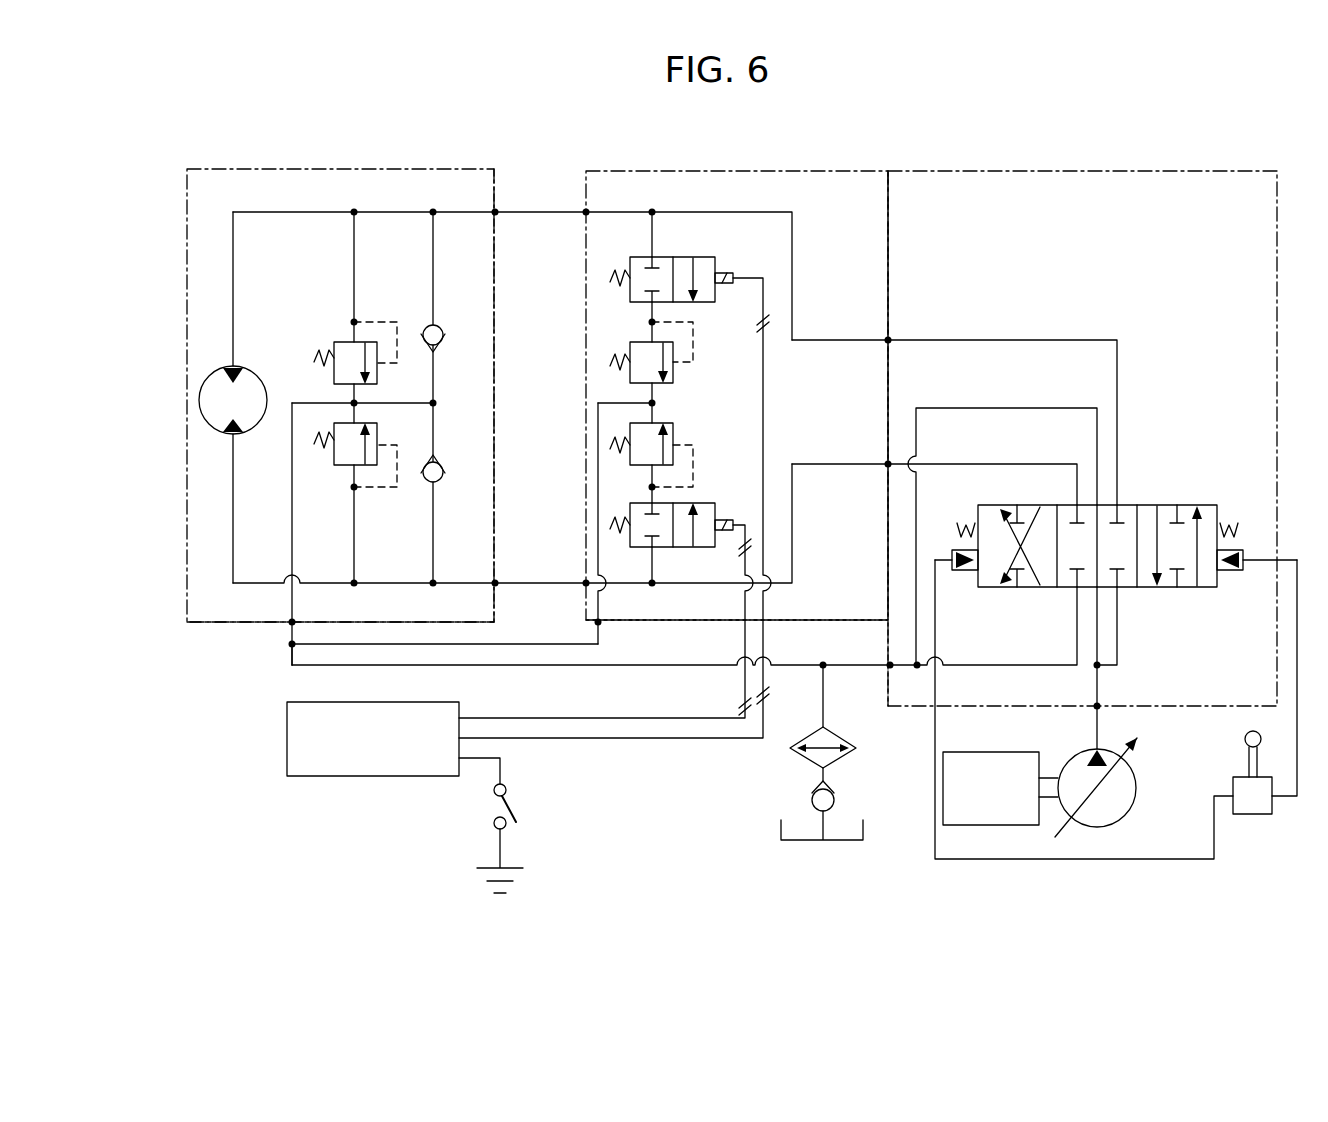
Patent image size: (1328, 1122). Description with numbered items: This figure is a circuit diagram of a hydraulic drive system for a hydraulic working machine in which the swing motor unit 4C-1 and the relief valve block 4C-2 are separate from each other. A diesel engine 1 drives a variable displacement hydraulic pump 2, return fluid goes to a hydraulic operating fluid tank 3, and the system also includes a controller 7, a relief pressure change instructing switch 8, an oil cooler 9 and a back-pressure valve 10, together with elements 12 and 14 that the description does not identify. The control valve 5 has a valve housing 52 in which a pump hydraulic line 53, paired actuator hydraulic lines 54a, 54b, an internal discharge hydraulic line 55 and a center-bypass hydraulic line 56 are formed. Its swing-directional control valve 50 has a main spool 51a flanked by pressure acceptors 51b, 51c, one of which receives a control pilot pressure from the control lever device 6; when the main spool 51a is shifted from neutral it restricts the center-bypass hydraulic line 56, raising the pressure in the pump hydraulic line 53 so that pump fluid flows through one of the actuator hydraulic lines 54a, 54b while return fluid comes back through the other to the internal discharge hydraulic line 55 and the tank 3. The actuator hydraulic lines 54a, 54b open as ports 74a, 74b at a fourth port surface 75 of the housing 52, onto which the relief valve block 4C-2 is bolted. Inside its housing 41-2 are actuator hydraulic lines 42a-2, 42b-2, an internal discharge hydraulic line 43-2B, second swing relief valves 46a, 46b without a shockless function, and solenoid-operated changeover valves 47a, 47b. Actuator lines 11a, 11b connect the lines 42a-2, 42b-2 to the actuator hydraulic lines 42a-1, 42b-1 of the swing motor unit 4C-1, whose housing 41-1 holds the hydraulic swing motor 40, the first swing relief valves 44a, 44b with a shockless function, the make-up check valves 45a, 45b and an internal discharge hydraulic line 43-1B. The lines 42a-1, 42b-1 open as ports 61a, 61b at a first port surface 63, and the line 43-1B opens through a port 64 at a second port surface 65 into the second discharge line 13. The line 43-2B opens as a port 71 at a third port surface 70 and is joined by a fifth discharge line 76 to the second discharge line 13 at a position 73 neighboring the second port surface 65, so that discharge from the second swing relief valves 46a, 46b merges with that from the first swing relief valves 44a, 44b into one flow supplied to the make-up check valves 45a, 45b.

The diesel engine 1 is at (1012, 748).
The variable displacement hydraulic pump 2 is at (1138, 792).
The hydraulic operating fluid tank 3 is at (865, 822).
The control valve 5 is at (1130, 170).
The control lever device 6 is at (1273, 810).
The controller 7 is at (373, 778).
The relief pressure change instructing switch 8 is at (517, 808).
The oil cooler 9 is at (850, 735).
The back-pressure valve 10 is at (836, 793).
The actuator line 11a is at (530, 213).
The actuator line 11b is at (528, 582).
The line 12 is at (807, 663).
The second discharge line 13 is at (480, 667).
The drain line 14 is at (824, 692).
The hydraulic swing motor 40 is at (255, 370).
The housing 41-1 is at (470, 198).
The housing 41-2 is at (862, 203).
The actuator hydraulic line 42a-1 is at (271, 211).
The actuator hydraulic line 42b-1 is at (384, 585).
The actuator hydraulic line 42a-2 is at (651, 211).
The actuator hydraulic line 42b-2 is at (634, 585).
The internal discharge hydraulic line 43-1B is at (290, 533).
The internal discharge hydraulic line 43-2B is at (598, 437).
The first swing relief valve 44a is at (340, 342).
The first swing relief valve 44b is at (343, 467).
The make-up check valve 45a is at (443, 340).
The make-up check valve 45b is at (443, 462).
The second swing relief valve 46a is at (673, 373).
The second swing relief valve 46b is at (673, 428).
The solenoid-operated changeover valve 47a is at (715, 258).
The solenoid-operated changeover valve 47b is at (702, 503).
The swing-directional control valve 50 is at (1192, 500).
The main spool 51a is at (1140, 504).
The pressure acceptor 51b is at (1232, 571).
The pressure acceptor 51c is at (963, 571).
The valve housing 52 is at (1127, 297).
The pump hydraulic line 53 is at (1098, 685).
The actuator hydraulic line 54a is at (1001, 339).
The actuator hydraulic line 54b is at (1001, 463).
The internal discharge hydraulic line 55 is at (1020, 665).
The center-bypass hydraulic line 56 is at (1095, 618).
The port 61a is at (495, 211).
The port 61b is at (495, 582).
The first port surface 63 is at (497, 483).
The port 64 is at (292, 620).
The second port surface 65 is at (205, 625).
The third port surface 70 is at (852, 622).
The port 71 is at (600, 623).
The position 73 is at (290, 647).
The port 74a is at (889, 339).
The port 74b is at (880, 463).
The fourth port surface 75 is at (888, 262).
The fifth discharge line 76 is at (530, 644).
The swing motor unit 4C-1 is at (287, 168).
The relief valve block 4C-2 is at (768, 170).